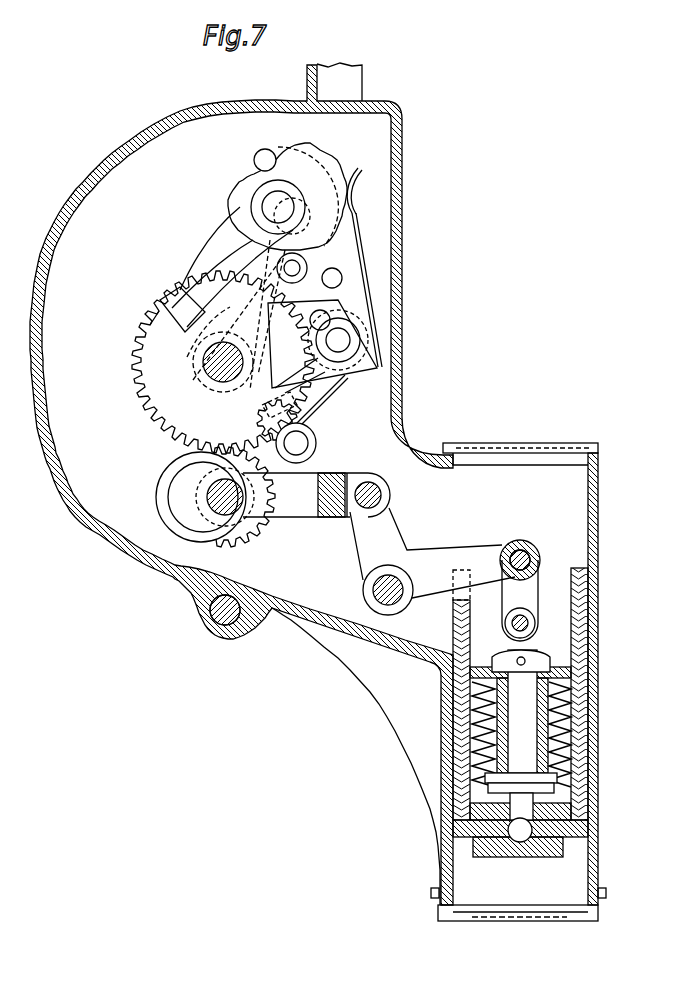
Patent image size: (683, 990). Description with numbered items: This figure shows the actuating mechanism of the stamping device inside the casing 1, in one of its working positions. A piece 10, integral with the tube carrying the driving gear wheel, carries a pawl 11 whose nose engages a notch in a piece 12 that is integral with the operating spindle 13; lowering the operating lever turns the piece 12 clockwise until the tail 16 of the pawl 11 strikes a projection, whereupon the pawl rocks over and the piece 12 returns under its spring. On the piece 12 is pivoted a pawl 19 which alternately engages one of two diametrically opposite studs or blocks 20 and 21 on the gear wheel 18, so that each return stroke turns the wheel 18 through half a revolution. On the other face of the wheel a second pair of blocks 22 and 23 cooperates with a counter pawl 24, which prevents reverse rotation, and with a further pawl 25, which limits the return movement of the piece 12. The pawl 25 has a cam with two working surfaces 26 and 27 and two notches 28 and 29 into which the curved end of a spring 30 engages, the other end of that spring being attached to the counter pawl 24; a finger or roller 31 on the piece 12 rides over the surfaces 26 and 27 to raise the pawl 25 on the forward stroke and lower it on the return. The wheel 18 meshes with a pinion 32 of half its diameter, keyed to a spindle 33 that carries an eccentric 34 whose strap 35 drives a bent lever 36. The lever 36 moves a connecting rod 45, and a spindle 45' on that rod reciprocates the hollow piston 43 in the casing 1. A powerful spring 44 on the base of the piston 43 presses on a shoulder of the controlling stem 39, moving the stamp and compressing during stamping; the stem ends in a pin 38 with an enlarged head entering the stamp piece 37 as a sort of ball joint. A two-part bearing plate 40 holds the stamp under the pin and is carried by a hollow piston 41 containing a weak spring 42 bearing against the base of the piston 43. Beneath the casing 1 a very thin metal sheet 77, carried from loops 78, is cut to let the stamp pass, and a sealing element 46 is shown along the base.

The casing 1 is at (402, 200).
The piece 10 is at (310, 297).
The pawl 11 is at (207, 283).
The piece 12 is at (287, 337).
The operating spindle 13 is at (215, 380).
The tail 16 is at (298, 232).
The gear wheel 18 is at (223, 362).
The pawl 19 is at (296, 358).
The stud or block 20 is at (253, 423).
The stud or block 21 is at (160, 298).
The block or stud 22 is at (267, 407).
The block or stud 23 is at (170, 323).
The counter pawl 24 is at (320, 393).
The pawl 25 is at (213, 252).
The working surface 26 is at (258, 238).
The working surface 27 is at (300, 243).
The notch 28 is at (360, 197).
The notch 29 is at (314, 159).
The spring 30 is at (355, 262).
The finger or roller 31 is at (296, 443).
The pinion 32 is at (242, 504).
The spindle 33 is at (218, 492).
The eccentric 34 is at (187, 495).
The strap 35 is at (316, 495).
The bent lever 36 is at (432, 561).
The piece 37 is at (485, 857).
The pin 38 is at (520, 830).
The controlling stem 39 is at (521, 721).
The bearing plate 40 is at (550, 857).
The hollow piston 41 is at (577, 783).
The weak spring 42 is at (563, 758).
The hollow piston 43 is at (572, 625).
The powerful spring 44 is at (492, 695).
The connecting rod 45 is at (520, 590).
The spindle 45' is at (501, 623).
The gasket 46 is at (525, 920).
The thin metal sheet 77 is at (460, 921).
The loops 78 is at (431, 893).